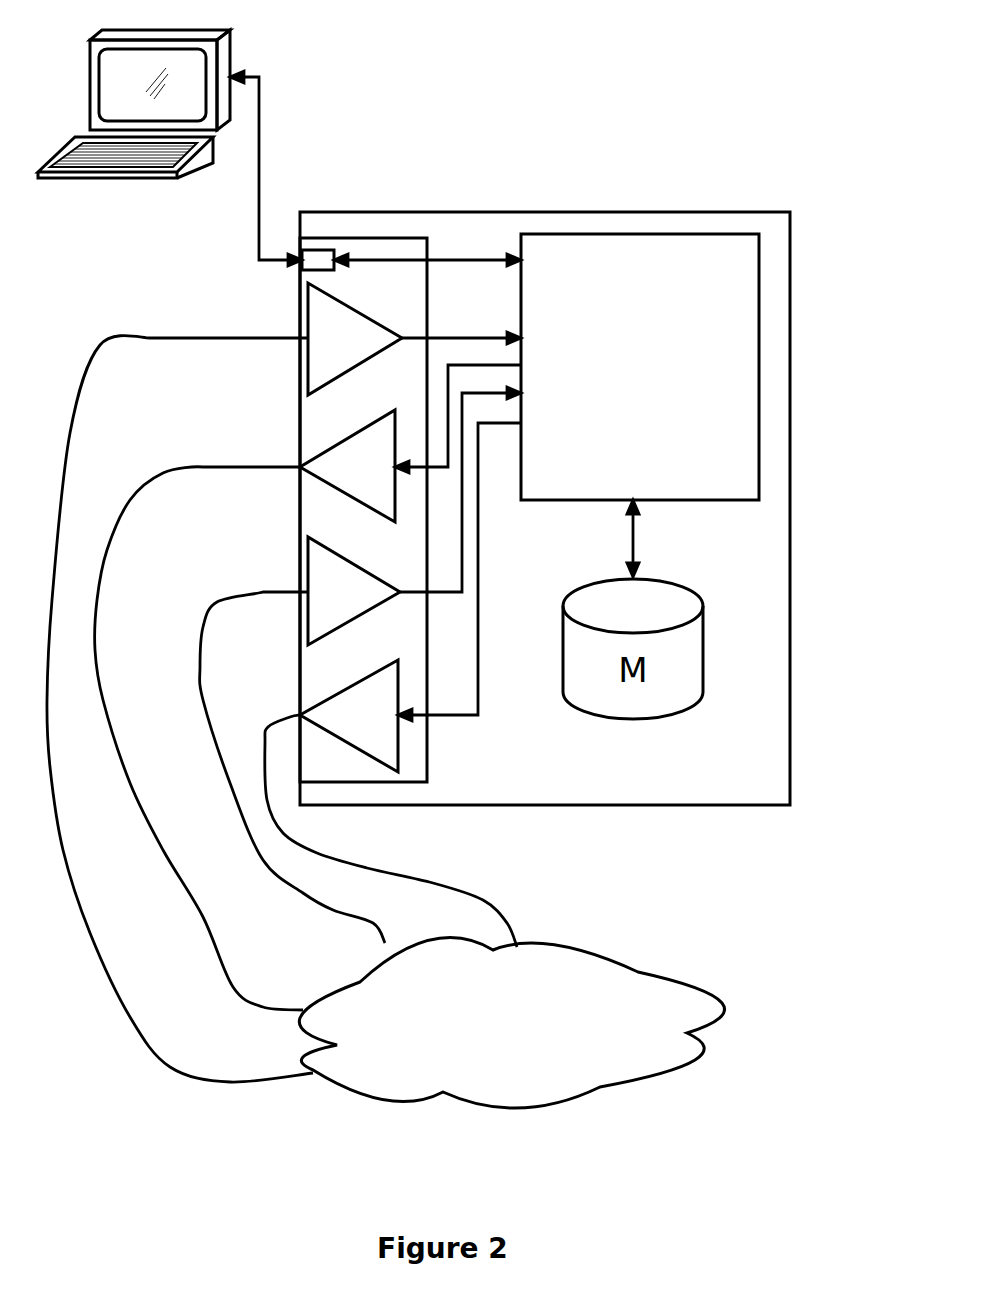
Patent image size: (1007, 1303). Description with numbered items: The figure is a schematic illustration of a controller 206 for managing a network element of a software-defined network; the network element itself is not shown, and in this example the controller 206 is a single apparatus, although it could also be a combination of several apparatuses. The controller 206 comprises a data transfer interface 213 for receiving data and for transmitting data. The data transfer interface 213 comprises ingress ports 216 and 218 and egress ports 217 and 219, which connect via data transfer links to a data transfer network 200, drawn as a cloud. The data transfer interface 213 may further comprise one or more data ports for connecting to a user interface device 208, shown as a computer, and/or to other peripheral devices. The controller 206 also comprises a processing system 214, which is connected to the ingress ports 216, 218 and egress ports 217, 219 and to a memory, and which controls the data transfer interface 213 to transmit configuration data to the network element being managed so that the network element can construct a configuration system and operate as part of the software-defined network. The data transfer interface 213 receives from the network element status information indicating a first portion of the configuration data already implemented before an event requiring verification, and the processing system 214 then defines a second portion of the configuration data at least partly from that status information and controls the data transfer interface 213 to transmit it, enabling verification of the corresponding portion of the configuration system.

The data transfer network 200 is at (474, 1039).
The controller 206 is at (707, 212).
The user interface device 208 is at (230, 55).
The data transfer interface 213 is at (428, 770).
The processing system 214 is at (617, 376).
The ingress port 216 is at (321, 352).
The egress port 217 is at (339, 477).
The ingress port 218 is at (321, 607).
The egress port 219 is at (341, 729).